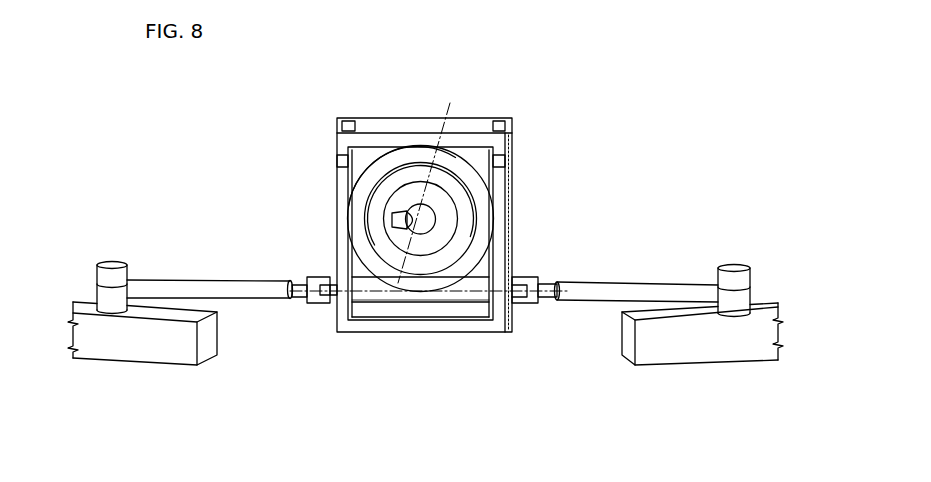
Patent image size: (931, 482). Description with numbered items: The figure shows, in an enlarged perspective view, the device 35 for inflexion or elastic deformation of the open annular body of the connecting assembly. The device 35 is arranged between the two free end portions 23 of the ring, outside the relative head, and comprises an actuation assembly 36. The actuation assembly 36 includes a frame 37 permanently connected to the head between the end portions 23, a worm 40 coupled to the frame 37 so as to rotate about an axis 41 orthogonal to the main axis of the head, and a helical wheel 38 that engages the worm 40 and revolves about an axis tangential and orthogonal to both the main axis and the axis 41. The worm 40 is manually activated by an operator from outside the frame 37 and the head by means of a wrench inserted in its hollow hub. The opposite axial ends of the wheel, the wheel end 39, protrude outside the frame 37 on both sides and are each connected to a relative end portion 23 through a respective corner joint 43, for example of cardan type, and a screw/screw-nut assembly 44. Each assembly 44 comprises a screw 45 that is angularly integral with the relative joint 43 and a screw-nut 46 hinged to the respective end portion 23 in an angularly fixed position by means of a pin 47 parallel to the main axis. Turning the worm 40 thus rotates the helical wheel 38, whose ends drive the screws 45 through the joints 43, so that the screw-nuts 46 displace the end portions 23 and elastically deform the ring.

The free end portions 23 is at (172, 355).
The device for inflexion or elastic deformation 35 is at (538, 145).
The actuation assembly 36 is at (390, 112).
The frame 37 is at (497, 180).
The helical wheel 38 is at (466, 300).
The wheel end 39 is at (393, 300).
The worm 40 is at (448, 227).
The axis 41 is at (452, 109).
The corner joint 43 is at (316, 314).
The screw/screw-nut assembly 44 is at (422, 297).
The screw 45 is at (295, 298).
The screw-nut 46 is at (163, 285).
The pin 47 is at (96, 268).